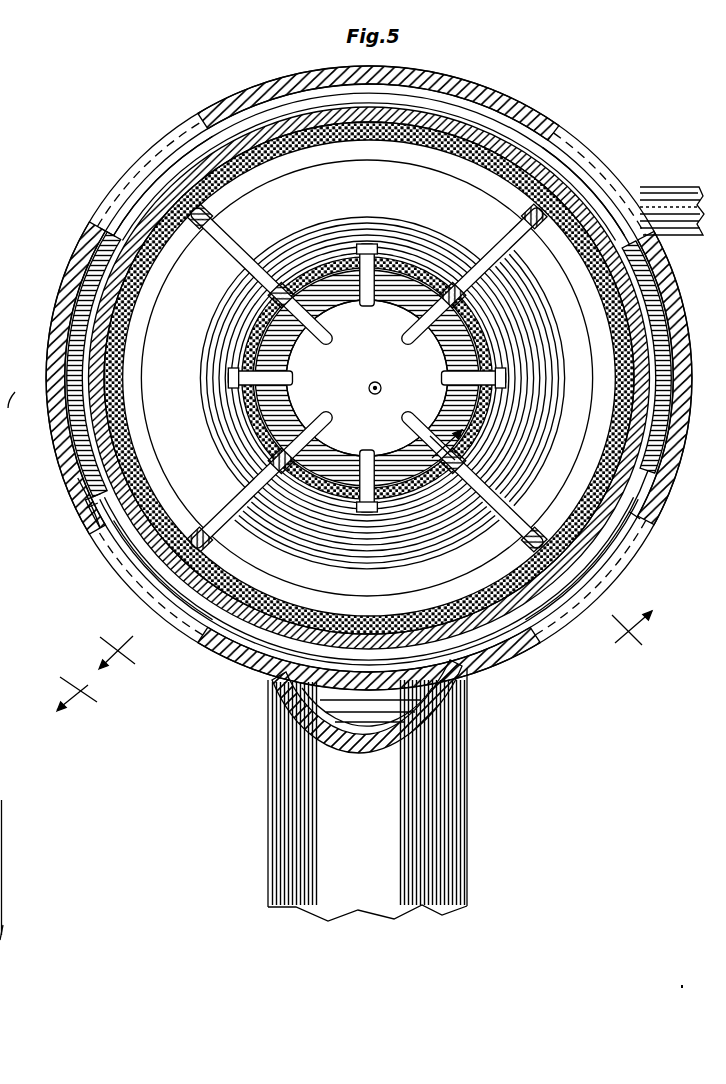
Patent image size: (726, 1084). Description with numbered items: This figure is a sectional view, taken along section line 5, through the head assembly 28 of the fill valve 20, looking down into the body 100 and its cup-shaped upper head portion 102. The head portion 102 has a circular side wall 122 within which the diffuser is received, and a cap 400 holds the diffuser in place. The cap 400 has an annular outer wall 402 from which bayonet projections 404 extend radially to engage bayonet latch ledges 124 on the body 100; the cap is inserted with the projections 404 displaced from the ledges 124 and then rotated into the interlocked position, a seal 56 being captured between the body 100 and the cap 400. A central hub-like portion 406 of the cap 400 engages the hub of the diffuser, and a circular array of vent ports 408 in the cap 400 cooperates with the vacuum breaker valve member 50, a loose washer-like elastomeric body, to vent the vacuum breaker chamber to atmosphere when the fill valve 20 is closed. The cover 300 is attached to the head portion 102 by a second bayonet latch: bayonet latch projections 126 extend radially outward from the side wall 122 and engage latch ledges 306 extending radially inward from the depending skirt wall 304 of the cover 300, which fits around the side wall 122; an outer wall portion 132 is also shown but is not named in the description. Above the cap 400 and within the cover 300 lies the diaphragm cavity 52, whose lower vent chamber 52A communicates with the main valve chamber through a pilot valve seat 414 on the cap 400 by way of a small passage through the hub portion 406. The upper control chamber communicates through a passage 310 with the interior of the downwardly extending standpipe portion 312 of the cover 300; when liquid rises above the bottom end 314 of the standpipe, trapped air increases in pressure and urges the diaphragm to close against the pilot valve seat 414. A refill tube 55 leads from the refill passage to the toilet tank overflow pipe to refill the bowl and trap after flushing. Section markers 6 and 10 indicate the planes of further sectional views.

The section line 5 is at (117, 660).
The section line 6 is at (77, 703).
The section line 10 is at (516, 546).
The fill valve 20 is at (619, 74).
The head assembly 28 is at (251, 84).
The vacuum breaker valve member 50 is at (243, 353).
The diaphragm cavity 52 is at (587, 360).
The lower vent chamber 52A is at (653, 473).
The refill tube 55 is at (667, 194).
The seal 56 is at (670, 430).
The body 100 is at (424, 110).
The upper head portion 102 is at (80, 437).
The circular side wall 122 is at (300, 128).
The bayonet latch ledges 124 is at (577, 530).
The bayonet latch projections 126 is at (563, 610).
The outer ring wall 132 is at (657, 300).
The cover 300 is at (70, 493).
The skirt wall 304 is at (237, 102).
The latch ledges 306 is at (595, 578).
The passage 310 is at (355, 724).
The standpipe portion 312 is at (0, 800).
The bottom end 314 is at (0, 945).
The cap 400 is at (265, 670).
The annular outer wall 402 is at (88, 300).
The bayonet projections 404 is at (487, 610).
The central hub-like portion 406 is at (333, 300).
The vent ports 408 is at (395, 535).
The pilot valve seat 414 is at (368, 391).